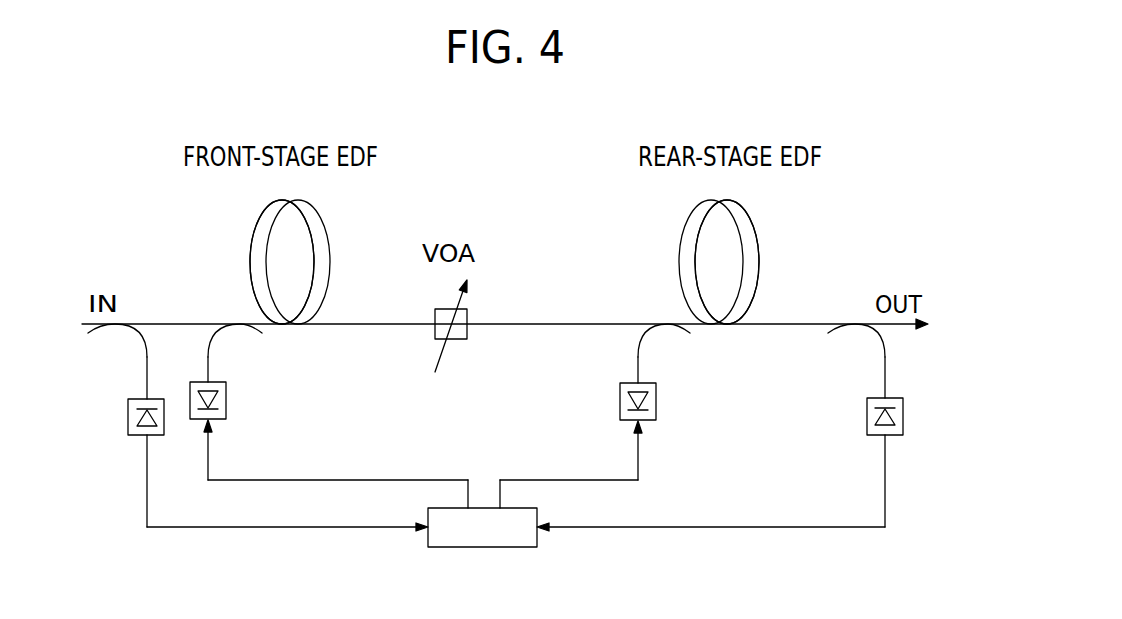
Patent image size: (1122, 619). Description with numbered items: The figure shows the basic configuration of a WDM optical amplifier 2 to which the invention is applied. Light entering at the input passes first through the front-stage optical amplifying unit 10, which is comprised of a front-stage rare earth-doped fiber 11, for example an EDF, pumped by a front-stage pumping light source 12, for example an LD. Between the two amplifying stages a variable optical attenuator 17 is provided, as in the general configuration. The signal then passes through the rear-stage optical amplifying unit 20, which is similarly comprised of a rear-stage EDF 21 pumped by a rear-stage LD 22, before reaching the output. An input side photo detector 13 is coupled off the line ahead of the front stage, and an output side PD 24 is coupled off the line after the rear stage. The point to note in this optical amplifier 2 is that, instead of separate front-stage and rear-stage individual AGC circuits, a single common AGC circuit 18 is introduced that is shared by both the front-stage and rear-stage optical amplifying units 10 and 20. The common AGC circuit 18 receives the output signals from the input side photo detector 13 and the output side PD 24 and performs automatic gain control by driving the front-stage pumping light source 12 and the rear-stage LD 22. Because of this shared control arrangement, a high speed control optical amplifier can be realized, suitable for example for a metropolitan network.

The optical amplifier 2 is at (478, 147).
The front-stage optical amplifying unit 10 is at (346, 215).
The front-stage rare earth-doped fiber 11 is at (282, 242).
The front-stage pumping light source 12 is at (213, 384).
The input side photo detector 13 is at (132, 437).
The variable optical attenuator 17 is at (460, 340).
The common AGC circuit 18 is at (480, 548).
The rear-stage optical amplifying unit 20 is at (648, 226).
The rear-stage EDF 21 is at (727, 242).
The rear-stage LD 22 is at (648, 384).
The output side PD 24 is at (893, 437).